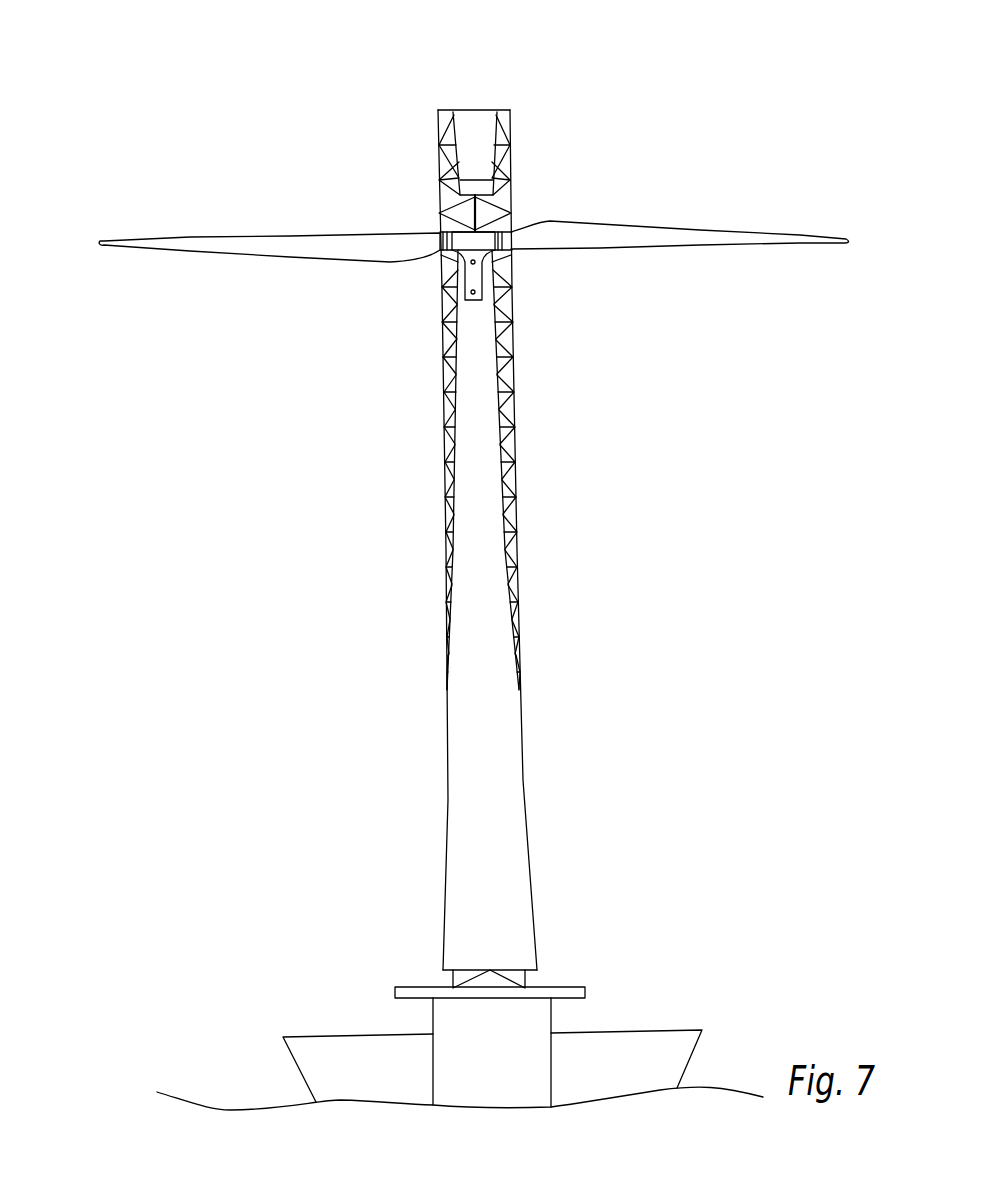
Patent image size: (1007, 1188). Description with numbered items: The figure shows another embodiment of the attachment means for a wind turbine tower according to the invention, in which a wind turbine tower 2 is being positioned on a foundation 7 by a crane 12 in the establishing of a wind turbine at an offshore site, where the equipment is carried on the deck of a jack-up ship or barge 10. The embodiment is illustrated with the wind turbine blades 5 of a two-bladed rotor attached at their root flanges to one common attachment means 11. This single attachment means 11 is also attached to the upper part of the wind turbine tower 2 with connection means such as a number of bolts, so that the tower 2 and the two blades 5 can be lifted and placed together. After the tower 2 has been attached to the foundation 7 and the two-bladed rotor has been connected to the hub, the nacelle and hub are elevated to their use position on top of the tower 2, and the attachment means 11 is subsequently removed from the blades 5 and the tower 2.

The wind turbine tower 2 is at (513, 813).
The wind turbine blades 5 is at (668, 233).
The foundation 7 is at (587, 990).
The jack-up ship or barge 10 is at (638, 1028).
The attachment means 11 is at (472, 278).
The crane 12 is at (503, 131).